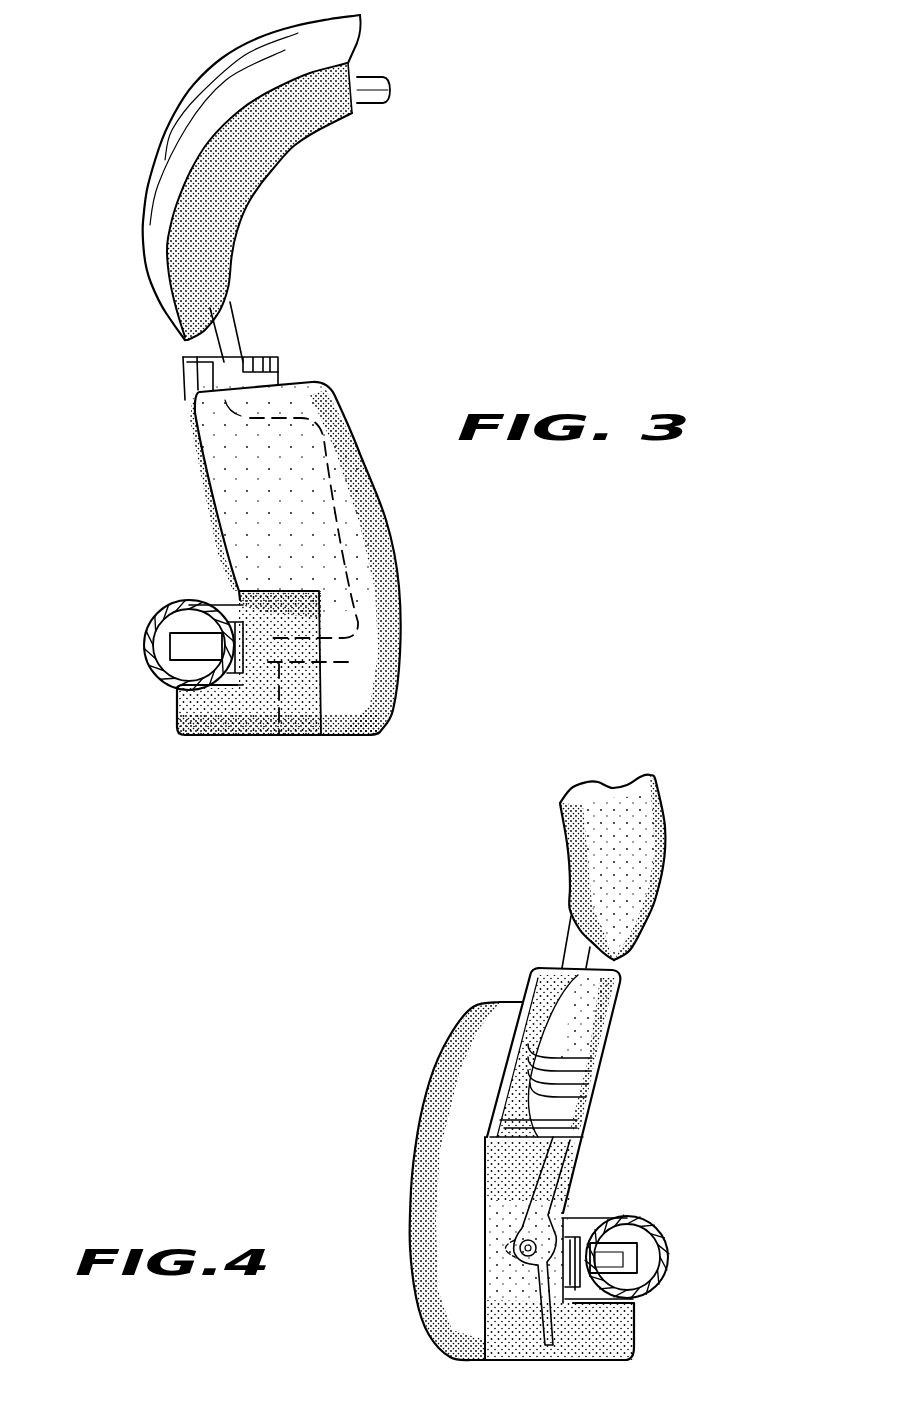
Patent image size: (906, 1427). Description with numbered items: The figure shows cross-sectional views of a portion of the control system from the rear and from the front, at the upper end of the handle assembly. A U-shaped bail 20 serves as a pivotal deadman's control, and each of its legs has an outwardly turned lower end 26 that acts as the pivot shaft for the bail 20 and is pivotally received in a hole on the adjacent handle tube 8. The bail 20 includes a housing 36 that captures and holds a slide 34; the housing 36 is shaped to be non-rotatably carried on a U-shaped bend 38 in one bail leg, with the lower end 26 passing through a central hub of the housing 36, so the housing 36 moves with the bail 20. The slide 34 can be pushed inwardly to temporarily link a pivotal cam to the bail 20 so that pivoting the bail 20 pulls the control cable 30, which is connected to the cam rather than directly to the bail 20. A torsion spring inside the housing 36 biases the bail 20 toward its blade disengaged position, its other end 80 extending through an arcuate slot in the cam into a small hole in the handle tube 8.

In FIG. 3, the bail 20 is at (172, 111).
In FIG. 4, the bail 20 is at (667, 827).
In FIG. 3, the slide 34 is at (180, 366).
In FIG. 4, the slide 34 is at (528, 968).
In FIG. 3, the housing 36 is at (243, 442).
In FIG. 4, the housing 36 is at (430, 1120).
In FIG. 3, the U-shaped bend 38 is at (384, 520).
In FIG. 3, the handle tube 8 is at (167, 610).
In FIG. 3, the outwardly turned lower end 26 is at (183, 647).
In FIG. 4, the outwardly turned lower end 26 is at (640, 1303).
In FIG. 4, the control cable 30 is at (517, 1270).
In FIG. 4, the other end of spring 80 is at (640, 1228).